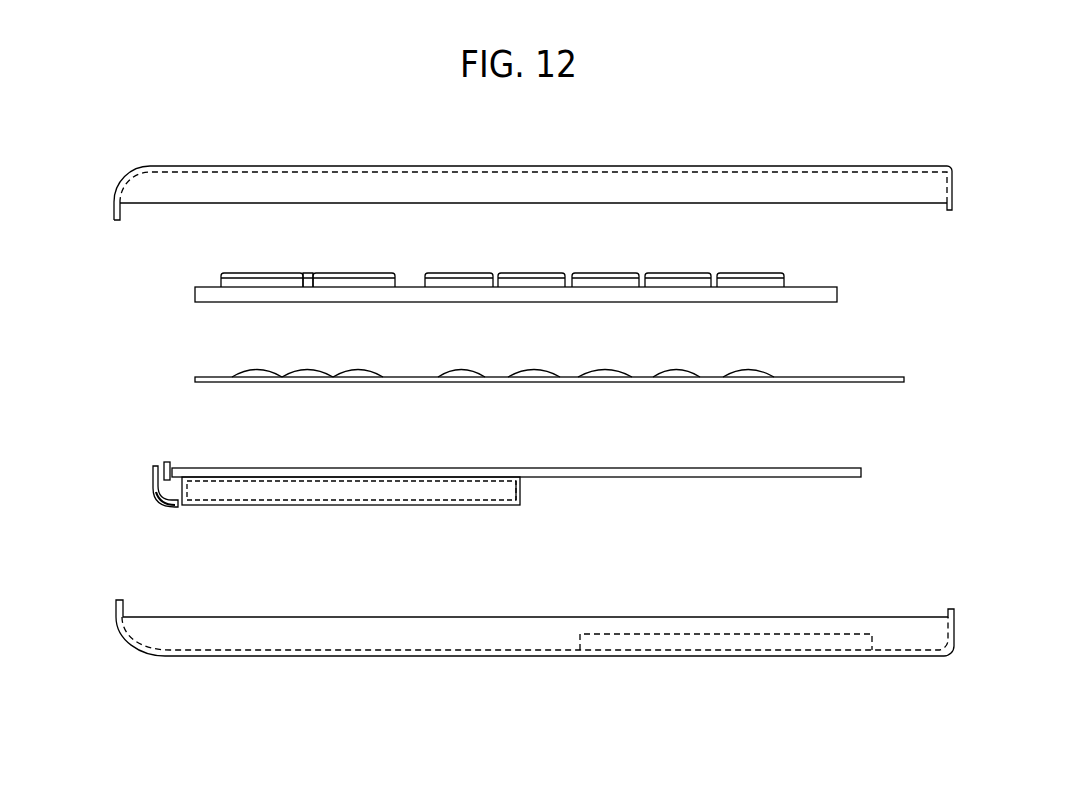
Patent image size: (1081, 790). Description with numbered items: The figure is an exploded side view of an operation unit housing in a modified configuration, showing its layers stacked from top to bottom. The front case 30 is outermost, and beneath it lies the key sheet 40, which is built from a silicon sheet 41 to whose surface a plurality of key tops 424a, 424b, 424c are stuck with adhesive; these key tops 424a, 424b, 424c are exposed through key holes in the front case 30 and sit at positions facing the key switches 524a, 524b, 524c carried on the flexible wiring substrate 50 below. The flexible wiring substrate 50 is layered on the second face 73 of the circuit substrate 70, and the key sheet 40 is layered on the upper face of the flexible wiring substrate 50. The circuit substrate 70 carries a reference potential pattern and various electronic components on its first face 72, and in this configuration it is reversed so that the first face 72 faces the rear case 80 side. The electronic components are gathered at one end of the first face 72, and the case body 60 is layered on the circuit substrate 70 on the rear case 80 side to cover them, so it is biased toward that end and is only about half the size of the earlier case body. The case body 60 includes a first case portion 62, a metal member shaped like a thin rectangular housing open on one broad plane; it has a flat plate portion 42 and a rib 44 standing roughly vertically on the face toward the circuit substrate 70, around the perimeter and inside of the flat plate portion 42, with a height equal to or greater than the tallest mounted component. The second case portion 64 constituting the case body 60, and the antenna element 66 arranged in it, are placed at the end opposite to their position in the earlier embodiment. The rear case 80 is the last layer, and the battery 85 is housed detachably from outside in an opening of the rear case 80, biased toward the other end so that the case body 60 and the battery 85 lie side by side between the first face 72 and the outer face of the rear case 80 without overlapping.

The front case 30 is at (925, 159).
The key sheet 40 is at (559, 287).
The sheet 41 is at (800, 302).
The key top 424a is at (361, 274).
The key top 424b is at (585, 276).
The key top 424c is at (308, 274).
The flexible wiring substrate 50 is at (591, 354).
The key switch 524a is at (262, 371).
The key switch 524b is at (620, 372).
The key switch 524c is at (313, 371).
The circuit substrate 70 is at (563, 451).
The second face 73 is at (470, 468).
The first face 72 is at (481, 479).
The rib 44 is at (522, 489).
The flat plate portion 42 is at (392, 523).
The first case portion 62 is at (313, 508).
The case body 60 is at (143, 514).
The antenna element 66 is at (152, 482).
The second case portion 64 is at (176, 514).
The rear case 80 is at (583, 654).
The battery 85 is at (822, 643).